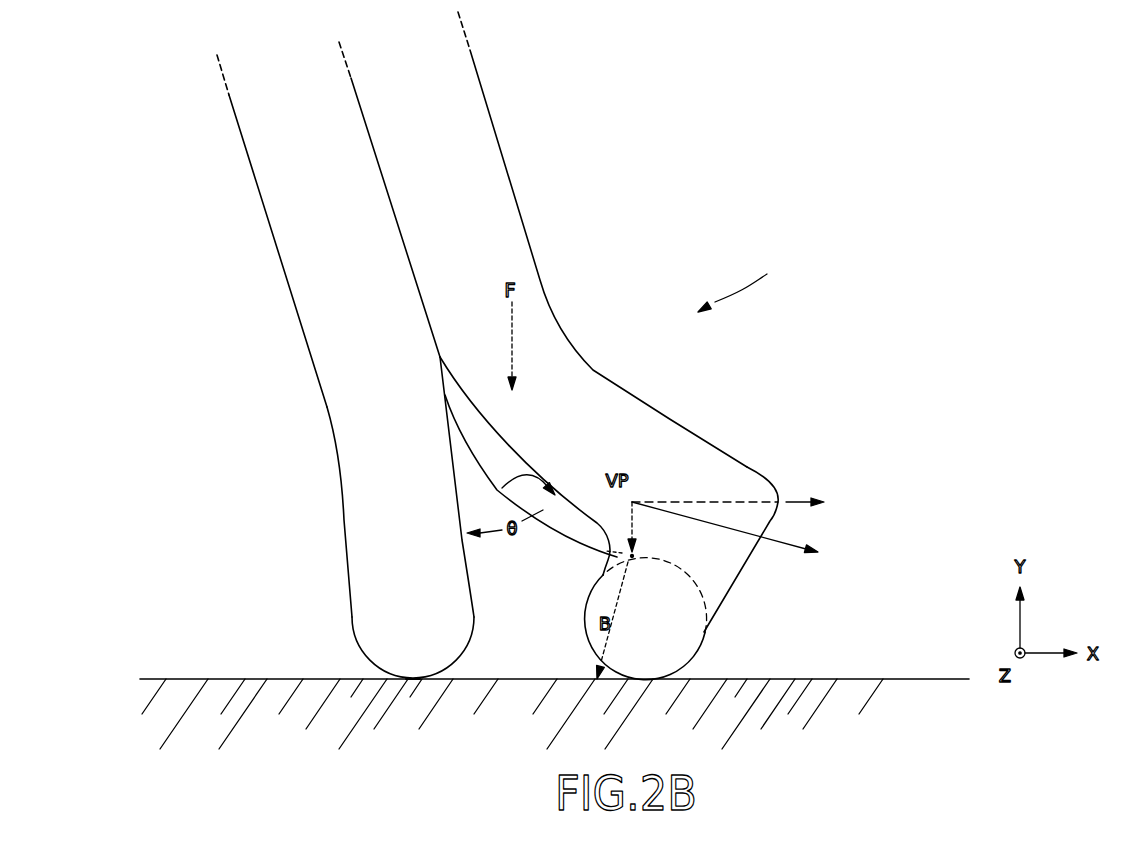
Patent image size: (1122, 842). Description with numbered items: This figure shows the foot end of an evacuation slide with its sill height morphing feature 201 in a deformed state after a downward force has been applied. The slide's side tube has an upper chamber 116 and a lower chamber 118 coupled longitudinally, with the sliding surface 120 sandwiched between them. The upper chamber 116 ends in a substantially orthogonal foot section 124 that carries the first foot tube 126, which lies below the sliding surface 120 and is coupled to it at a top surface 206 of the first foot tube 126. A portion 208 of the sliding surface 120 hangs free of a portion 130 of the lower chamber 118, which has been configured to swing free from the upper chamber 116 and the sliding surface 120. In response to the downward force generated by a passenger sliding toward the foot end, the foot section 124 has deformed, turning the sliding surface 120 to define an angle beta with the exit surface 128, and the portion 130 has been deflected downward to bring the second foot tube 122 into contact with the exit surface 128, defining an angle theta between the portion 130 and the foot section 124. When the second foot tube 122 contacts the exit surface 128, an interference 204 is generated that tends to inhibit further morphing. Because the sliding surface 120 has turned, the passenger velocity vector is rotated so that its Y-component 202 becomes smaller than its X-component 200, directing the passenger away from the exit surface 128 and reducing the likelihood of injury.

The upper chamber 116 is at (488, 172).
The lower chamber 118 is at (283, 248).
The sliding surface 120 is at (578, 550).
The second foot tube 122 is at (422, 638).
The foot section 124 is at (738, 469).
The first foot tube 126 is at (658, 638).
The exit surface 128 is at (222, 679).
The portion of lower chamber 130 is at (357, 527).
The X-component 200 is at (788, 500).
The sill height morphing feature 201 is at (747, 281).
The Y-component 202 is at (633, 521).
The interference 204 is at (410, 683).
The top surface of first foot tube 206 is at (642, 560).
The portion of sliding surface 208 is at (532, 476).